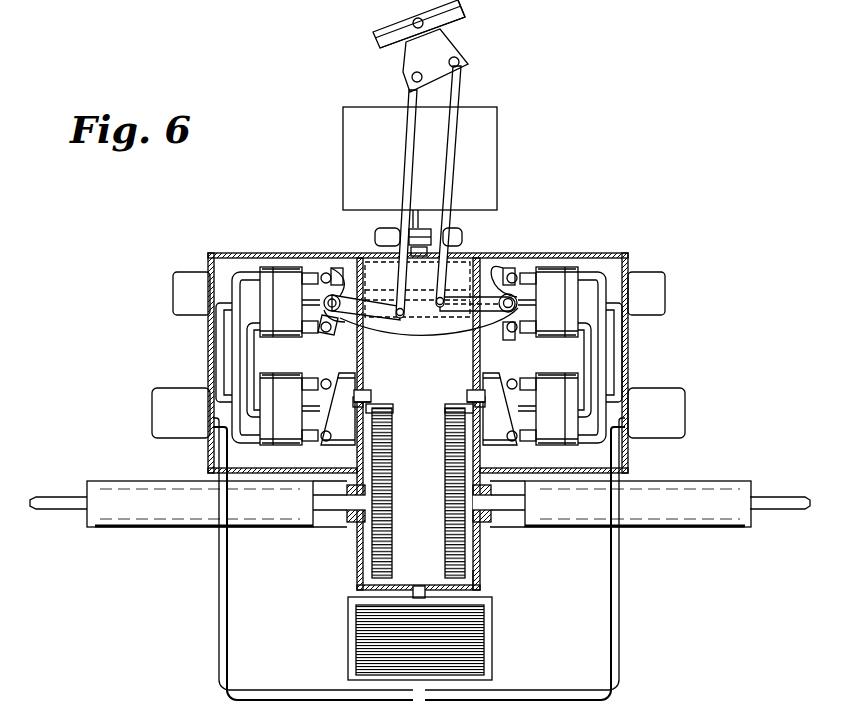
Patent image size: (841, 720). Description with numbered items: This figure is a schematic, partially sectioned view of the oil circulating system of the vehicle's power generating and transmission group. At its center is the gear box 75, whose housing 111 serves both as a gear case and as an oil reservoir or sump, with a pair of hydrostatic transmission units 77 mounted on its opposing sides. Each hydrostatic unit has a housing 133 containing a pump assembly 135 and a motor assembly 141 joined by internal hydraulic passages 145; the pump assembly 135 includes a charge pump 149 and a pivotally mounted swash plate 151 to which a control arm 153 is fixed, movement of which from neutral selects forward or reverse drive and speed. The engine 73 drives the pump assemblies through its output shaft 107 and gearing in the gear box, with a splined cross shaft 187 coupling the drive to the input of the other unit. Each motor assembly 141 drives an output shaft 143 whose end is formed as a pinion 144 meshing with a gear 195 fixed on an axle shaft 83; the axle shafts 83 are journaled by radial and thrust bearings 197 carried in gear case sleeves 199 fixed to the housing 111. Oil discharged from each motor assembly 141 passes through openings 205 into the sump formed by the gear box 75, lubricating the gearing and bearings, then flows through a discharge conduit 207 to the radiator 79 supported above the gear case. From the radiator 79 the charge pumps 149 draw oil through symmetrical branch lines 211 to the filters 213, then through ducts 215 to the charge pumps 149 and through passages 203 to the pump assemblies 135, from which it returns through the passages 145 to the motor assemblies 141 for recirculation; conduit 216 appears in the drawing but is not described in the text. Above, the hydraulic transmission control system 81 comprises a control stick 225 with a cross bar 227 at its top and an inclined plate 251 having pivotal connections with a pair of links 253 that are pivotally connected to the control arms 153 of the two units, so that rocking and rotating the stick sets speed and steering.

The control stick 225 is at (390, 20).
The cross bar 227 is at (467, 15).
The hydraulic transmission control system 81 is at (477, 43).
The plate 251 is at (455, 55).
The links 253 is at (448, 150).
The engine 73 is at (486, 178).
The engine output shaft 107 is at (418, 213).
The housing 133 is at (247, 253).
The pump assembly 135 is at (283, 282).
The swash plate 151 is at (332, 292).
The passages 203 is at (223, 292).
The charge pump 149 is at (188, 298).
The left conduit loop 216 is at (232, 345).
The ducts 215 is at (613, 372).
The hydrostatic transmission units 77 is at (268, 348).
The hydraulic passages 145 is at (238, 383).
The filters 213 is at (172, 410).
The motor assembly 141 is at (287, 427).
The cross shaft 187 is at (417, 289).
The control arm 153 is at (460, 305).
The openings 205 is at (467, 387).
The output shaft 143 is at (467, 393).
The pinion 144 is at (467, 410).
The gears 195 is at (447, 533).
The radial and thrust bearings 197 is at (350, 523).
The gear case extensions or sleeves 199 is at (175, 512).
The axle shafts 83 is at (70, 505).
The discharge conduit 207 is at (421, 588).
The gear box 75 is at (362, 562).
The housing 111 is at (478, 583).
The radiator 79 is at (348, 645).
The branch lines 211 is at (219, 652).